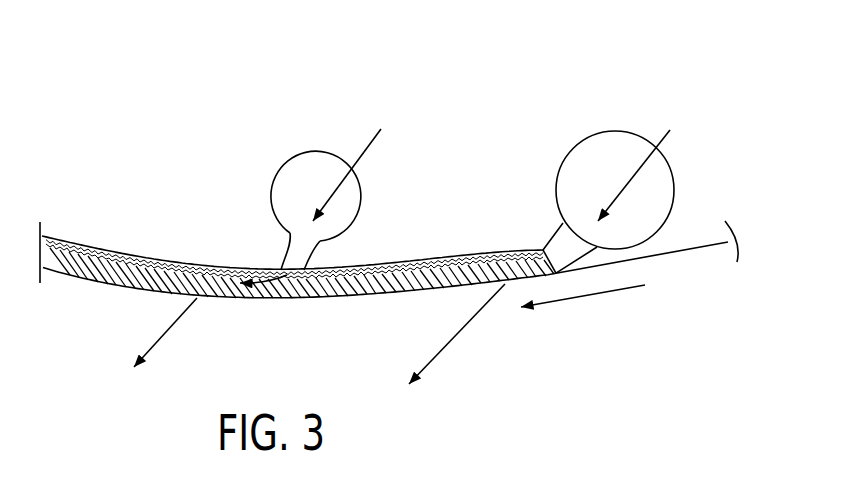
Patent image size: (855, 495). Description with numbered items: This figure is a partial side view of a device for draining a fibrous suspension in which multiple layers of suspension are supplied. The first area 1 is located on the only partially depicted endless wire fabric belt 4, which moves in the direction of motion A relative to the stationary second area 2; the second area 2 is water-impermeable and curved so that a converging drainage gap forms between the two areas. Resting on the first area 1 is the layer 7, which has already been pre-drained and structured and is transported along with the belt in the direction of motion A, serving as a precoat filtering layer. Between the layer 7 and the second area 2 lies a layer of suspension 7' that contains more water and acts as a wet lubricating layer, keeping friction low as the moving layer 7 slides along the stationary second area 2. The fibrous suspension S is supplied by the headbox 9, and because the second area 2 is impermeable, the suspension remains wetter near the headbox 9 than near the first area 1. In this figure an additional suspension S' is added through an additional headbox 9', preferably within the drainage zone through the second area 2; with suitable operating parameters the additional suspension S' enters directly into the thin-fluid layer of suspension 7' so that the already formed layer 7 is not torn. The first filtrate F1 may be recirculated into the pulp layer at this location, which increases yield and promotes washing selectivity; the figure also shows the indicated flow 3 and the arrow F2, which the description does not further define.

The composite panel 1 is at (73, 280).
The upper surface of panel 2 is at (138, 263).
The spreading of liquid droplet 3 is at (278, 261).
The substrate 4 is at (682, 253).
The core layer 7 is at (302, 295).
The surface layer 7' is at (294, 240).
The liquid droplet 9 is at (608, 182).
The deformed liquid droplet 9' is at (316, 180).
The droplet direction S is at (634, 155).
The deformed droplet direction S' is at (347, 156).
The direction of movement A is at (580, 298).
The force F1 is at (447, 346).
The force F2 is at (160, 340).